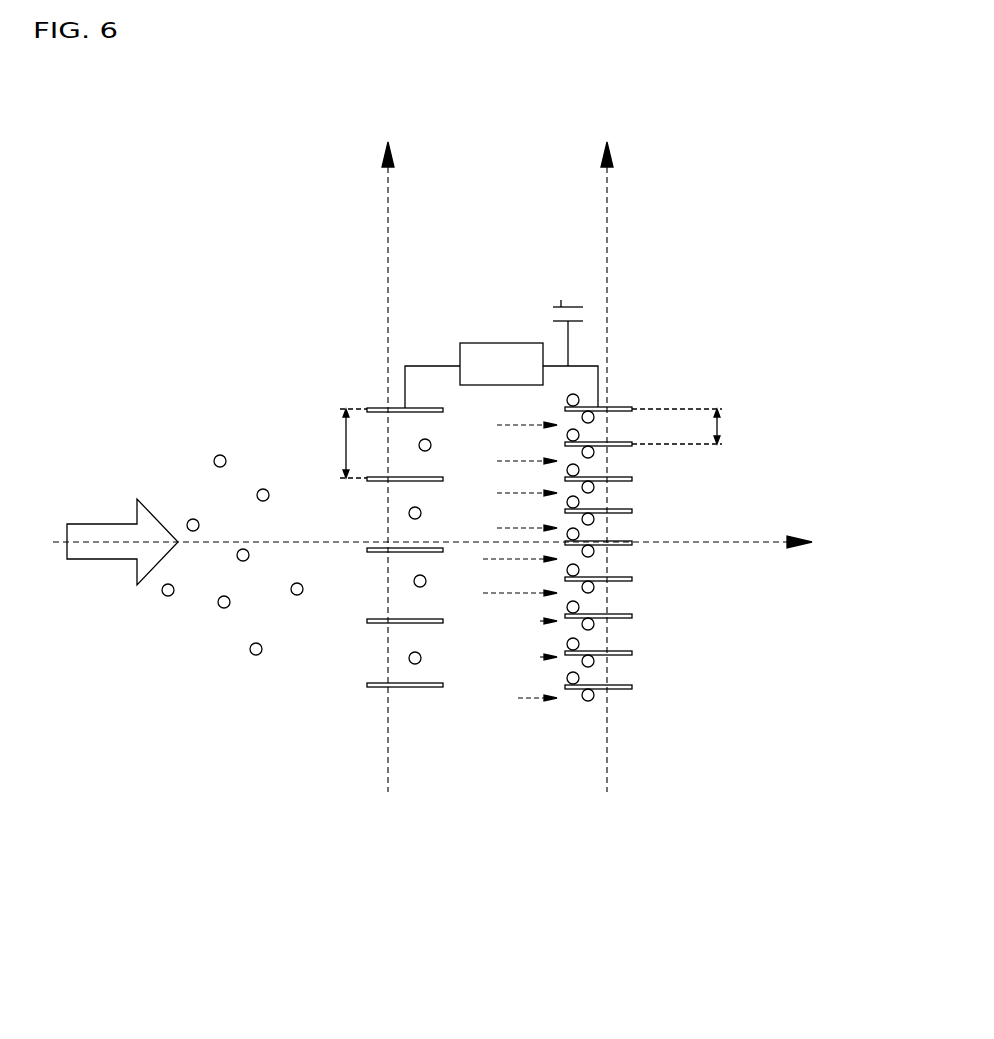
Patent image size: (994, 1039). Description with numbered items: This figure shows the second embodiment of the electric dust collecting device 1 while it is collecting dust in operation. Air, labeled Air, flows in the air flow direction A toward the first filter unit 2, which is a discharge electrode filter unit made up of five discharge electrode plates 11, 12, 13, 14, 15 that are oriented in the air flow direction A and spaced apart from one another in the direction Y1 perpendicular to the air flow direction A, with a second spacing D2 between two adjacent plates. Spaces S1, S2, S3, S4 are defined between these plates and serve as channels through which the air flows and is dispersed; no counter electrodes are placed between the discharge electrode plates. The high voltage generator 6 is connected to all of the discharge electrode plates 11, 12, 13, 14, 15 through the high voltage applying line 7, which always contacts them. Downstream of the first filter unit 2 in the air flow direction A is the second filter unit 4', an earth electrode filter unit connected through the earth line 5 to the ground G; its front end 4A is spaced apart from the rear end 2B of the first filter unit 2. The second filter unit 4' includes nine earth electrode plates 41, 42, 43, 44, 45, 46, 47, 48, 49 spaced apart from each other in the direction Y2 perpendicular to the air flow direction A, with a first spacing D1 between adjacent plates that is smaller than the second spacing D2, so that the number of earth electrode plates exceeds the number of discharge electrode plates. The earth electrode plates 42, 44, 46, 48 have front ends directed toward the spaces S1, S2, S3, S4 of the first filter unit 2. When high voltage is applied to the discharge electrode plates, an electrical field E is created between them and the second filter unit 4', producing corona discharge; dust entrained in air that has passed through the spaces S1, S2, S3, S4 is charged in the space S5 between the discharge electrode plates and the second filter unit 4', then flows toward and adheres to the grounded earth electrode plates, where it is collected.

The electric dust collecting device 1 is at (328, 308).
The first filter unit 2 is at (373, 596).
The rear end of the first filter unit 2B is at (443, 688).
The second filter unit 4' is at (633, 603).
The front end of the second filter unit 4A is at (562, 688).
The earth line 5 is at (598, 372).
The high voltage generator 6 is at (478, 343).
The high voltage applying line 7 is at (410, 366).
The discharge electrode plate 11 is at (378, 408).
The discharge electrode plate 12 is at (433, 481).
The discharge electrode plate 13 is at (368, 549).
The discharge electrode plate 14 is at (368, 622).
The discharge electrode plate 15 is at (405, 688).
The earth electrode plate 41 is at (632, 408).
The earth electrode plate 42 is at (632, 444).
The earth electrode plate 43 is at (632, 479).
The earth electrode plate 44 is at (632, 511).
The earth electrode plate 45 is at (632, 543).
The earth electrode plate 46 is at (632, 579).
The earth electrode plate 47 is at (632, 616).
The earth electrode plate 48 is at (632, 653).
The earth electrode plate 49 is at (632, 687).
The air flow direction A is at (763, 541).
The air Air is at (105, 551).
The first spacing D1 is at (690, 426).
The second spacing D2 is at (341, 443).
The electrical field E is at (518, 698).
The ground G is at (561, 300).
The space S1 is at (382, 425).
The space S2 is at (375, 520).
The space S3 is at (375, 595).
The space S4 is at (378, 672).
The space S5 is at (477, 513).
The direction perpendicular to the air flow direction Y1 is at (386, 455).
The direction perpendicular to the air flow direction Y2 is at (603, 455).